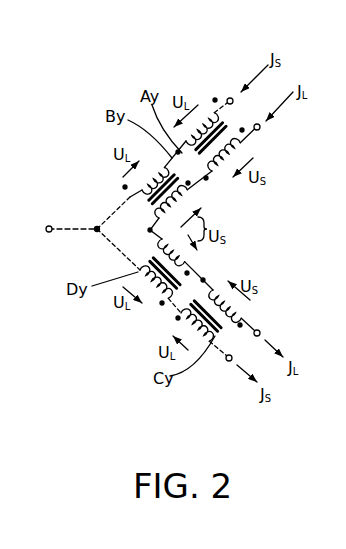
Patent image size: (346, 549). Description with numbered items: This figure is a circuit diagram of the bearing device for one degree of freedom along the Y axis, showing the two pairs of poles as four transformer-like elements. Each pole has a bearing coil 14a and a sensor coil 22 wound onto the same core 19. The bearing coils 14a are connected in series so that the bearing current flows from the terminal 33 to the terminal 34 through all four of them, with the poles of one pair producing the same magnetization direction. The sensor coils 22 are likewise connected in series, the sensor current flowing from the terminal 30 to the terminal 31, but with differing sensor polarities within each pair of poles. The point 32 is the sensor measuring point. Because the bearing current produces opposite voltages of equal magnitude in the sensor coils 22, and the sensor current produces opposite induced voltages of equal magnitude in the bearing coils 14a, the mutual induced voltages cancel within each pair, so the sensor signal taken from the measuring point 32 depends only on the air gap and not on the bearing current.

The bearing coils 14a is at (224, 166).
The cores 19 is at (125, 179).
The sensor coils 22 is at (122, 182).
The terminal 30 is at (229, 98).
The terminal 31 is at (226, 360).
The sensor measuring point 32 is at (49, 226).
The terminal 33 is at (260, 128).
The terminal 34 is at (260, 332).